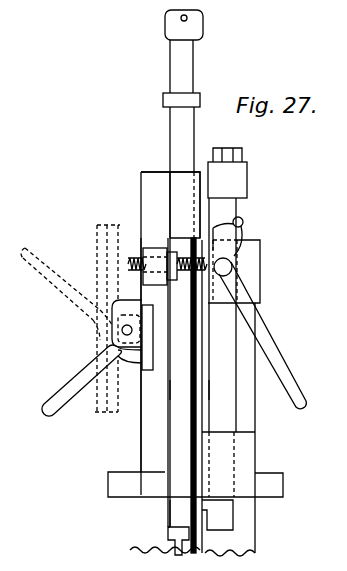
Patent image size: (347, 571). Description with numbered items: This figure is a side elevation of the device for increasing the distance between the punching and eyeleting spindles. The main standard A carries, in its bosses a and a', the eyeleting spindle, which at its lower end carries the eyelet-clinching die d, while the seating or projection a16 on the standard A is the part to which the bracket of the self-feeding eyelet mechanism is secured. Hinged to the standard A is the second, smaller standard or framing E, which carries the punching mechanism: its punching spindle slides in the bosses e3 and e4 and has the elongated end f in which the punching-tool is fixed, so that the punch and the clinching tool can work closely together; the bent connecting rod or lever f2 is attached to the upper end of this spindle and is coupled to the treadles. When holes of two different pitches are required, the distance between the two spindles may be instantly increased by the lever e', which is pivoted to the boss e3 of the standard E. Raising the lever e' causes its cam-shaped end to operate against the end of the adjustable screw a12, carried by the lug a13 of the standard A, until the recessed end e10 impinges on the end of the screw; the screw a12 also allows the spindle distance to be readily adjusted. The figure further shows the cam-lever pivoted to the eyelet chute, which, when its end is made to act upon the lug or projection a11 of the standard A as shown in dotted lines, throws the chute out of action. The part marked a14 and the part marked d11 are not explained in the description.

The standard A is at (138, 406).
The seating or projection a16 is at (150, 196).
The boss a is at (141, 207).
The boss a' is at (117, 355).
The lug a13 is at (147, 277).
The adjustable screw a12 is at (128, 262).
The bracket a14 is at (122, 328).
The lug or projection a11 is at (150, 369).
The connecting rod or lever f2 is at (247, 180).
The recessed end e10 is at (242, 230).
The boss e3 is at (260, 265).
The lever e' is at (260, 333).
The standard or framing E is at (256, 422).
The boss e4 is at (256, 452).
The elongated end f is at (217, 515).
The eyelet-clinching die d is at (156, 553).
The pin d11 is at (223, 560).